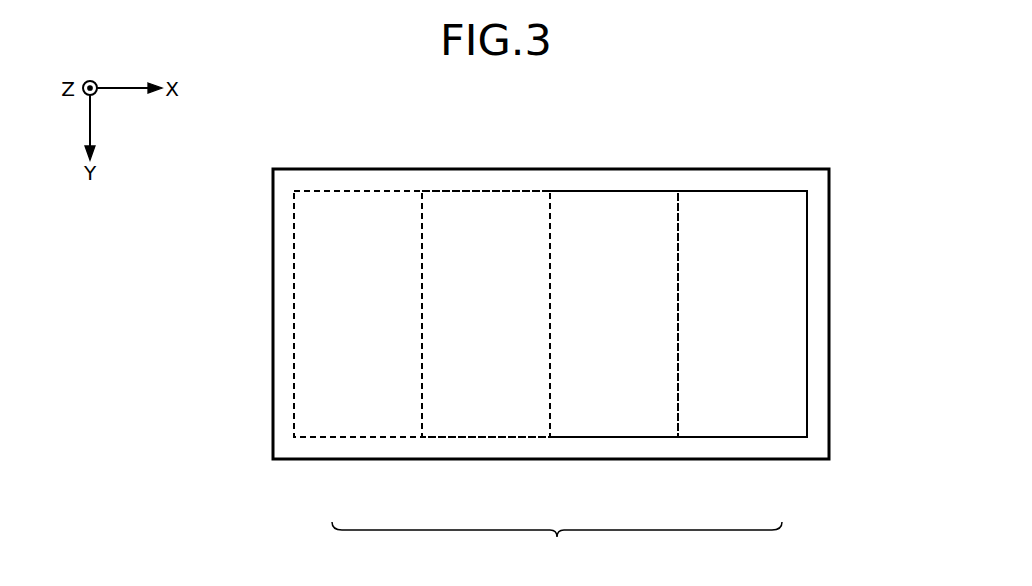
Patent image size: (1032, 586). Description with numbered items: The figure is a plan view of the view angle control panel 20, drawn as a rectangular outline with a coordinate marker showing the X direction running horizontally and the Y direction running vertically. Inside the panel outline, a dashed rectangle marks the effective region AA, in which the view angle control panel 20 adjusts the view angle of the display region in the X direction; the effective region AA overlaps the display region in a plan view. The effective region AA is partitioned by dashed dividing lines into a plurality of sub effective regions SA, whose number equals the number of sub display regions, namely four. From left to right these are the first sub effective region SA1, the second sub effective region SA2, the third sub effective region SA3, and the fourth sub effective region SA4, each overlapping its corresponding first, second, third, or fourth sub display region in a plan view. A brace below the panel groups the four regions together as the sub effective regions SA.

The view angle control panel 20 is at (329, 168).
The effective region AA is at (640, 190).
The sub effective regions SA is at (557, 545).
The first sub effective region SA1 is at (355, 438).
The second sub effective region SA2 is at (481, 438).
The third sub effective region SA3 is at (612, 438).
The fourth sub effective region SA4 is at (739, 438).